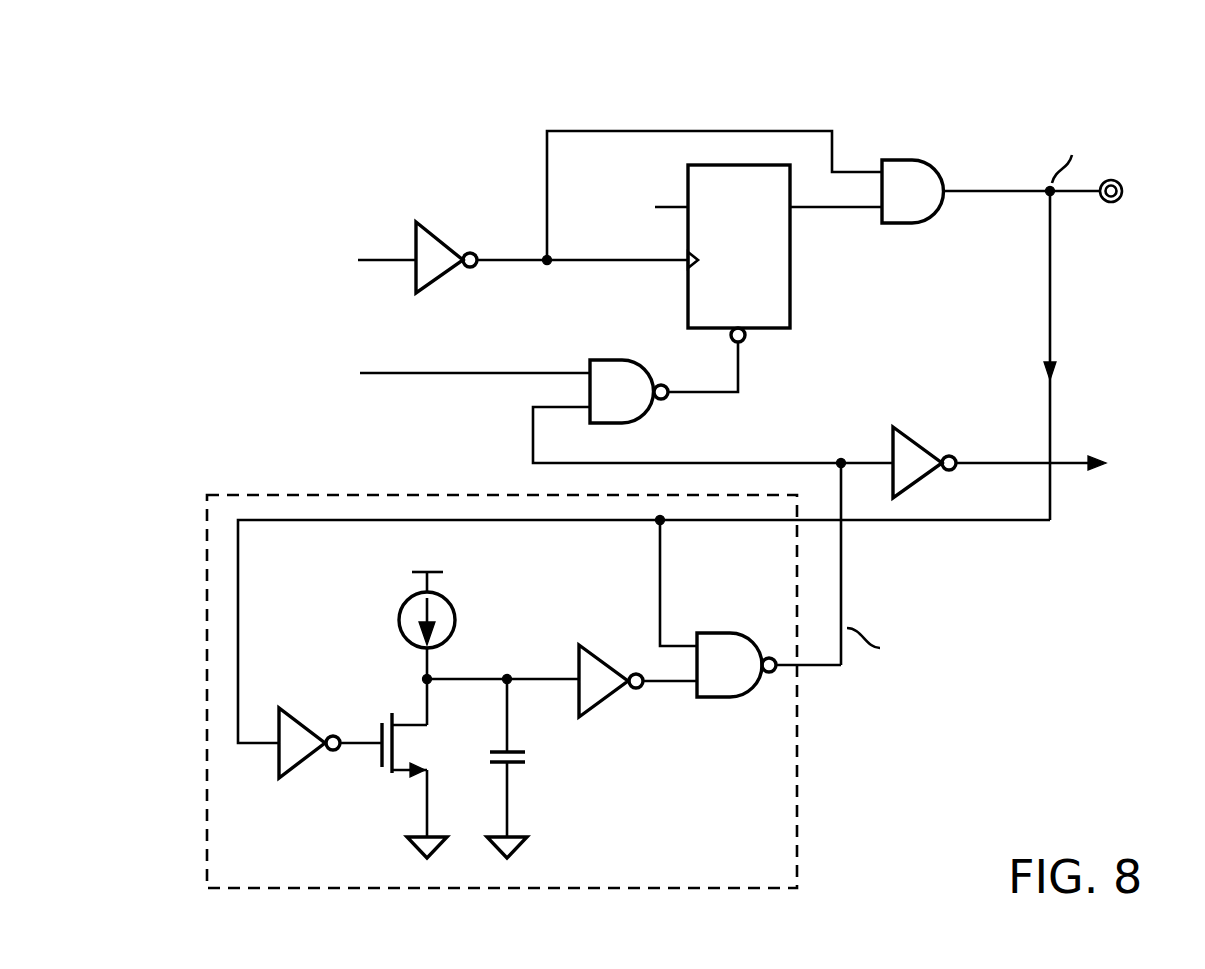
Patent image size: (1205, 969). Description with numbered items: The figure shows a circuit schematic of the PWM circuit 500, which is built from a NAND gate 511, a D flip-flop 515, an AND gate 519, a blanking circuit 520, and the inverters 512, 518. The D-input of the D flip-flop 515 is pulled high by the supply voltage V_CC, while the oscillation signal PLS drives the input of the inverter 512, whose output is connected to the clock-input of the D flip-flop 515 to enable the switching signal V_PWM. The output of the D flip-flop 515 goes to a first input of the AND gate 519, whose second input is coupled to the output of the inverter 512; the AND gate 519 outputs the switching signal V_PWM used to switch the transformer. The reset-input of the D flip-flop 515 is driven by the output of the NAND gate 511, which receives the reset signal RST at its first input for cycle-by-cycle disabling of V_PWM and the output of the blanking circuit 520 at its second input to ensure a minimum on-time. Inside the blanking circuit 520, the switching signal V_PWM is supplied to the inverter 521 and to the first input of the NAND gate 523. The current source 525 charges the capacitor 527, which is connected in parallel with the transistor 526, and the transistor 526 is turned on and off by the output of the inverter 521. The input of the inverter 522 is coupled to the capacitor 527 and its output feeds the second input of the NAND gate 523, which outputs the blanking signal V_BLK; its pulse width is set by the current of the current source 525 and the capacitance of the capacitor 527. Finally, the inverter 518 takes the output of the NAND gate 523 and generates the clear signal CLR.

The PWM circuit 500 is at (1178, 53).
The NAND gate 511 is at (615, 358).
The inverter 512 is at (438, 222).
The D flip-flop 515 is at (795, 306).
The inverter 518 is at (918, 427).
The AND gate 519 is at (900, 228).
The blanking circuit 520 is at (207, 572).
The inverter 521 is at (300, 706).
The inverter 522 is at (600, 645).
The NAND gate 523 is at (718, 700).
The current source 525 is at (458, 612).
The transistor 526 is at (383, 778).
The capacitor 527 is at (527, 757).